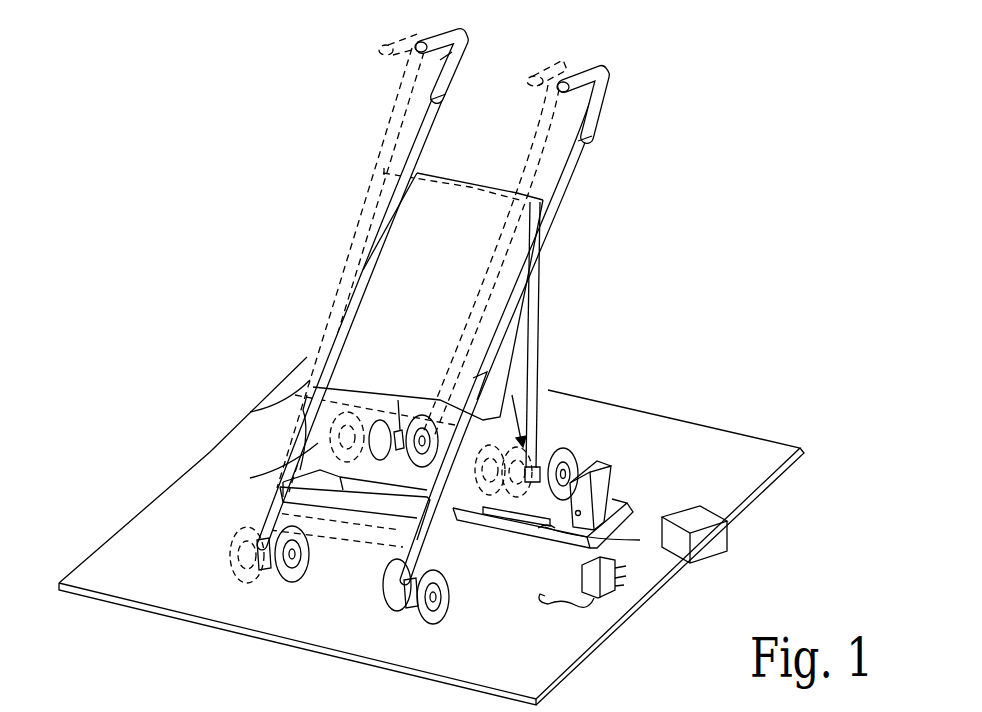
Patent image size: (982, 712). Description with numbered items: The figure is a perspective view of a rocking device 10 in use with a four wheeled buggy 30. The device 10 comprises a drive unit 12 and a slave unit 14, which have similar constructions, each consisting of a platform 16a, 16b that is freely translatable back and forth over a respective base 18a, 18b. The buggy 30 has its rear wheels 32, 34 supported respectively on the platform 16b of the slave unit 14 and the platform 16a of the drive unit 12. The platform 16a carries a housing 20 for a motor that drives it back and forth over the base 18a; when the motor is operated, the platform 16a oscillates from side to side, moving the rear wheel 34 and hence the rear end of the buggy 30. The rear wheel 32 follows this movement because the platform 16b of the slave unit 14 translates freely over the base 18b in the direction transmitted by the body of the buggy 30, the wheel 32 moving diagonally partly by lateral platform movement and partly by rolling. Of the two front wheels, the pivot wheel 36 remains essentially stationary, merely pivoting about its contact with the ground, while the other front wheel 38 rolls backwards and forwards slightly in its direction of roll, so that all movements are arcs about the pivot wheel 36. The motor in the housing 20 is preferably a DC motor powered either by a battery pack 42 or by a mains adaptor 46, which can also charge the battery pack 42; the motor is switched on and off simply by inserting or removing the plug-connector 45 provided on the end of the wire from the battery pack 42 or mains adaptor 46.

The rocking device 10 is at (462, 452).
The drive unit 12 is at (637, 520).
The slave unit 14 is at (320, 460).
The platform 16a is at (557, 524).
The platform 16b is at (343, 480).
The base 18a is at (463, 513).
The base 18b is at (313, 480).
The housing 20 is at (600, 468).
The four wheeled buggy 30 is at (370, 230).
The rear wheel 32 is at (413, 423).
The rear wheel 34 is at (565, 443).
The pivot wheel 36 is at (377, 607).
The front wheel 38 is at (230, 570).
The battery pack 42 is at (697, 520).
The plug-connector 45 is at (570, 525).
The mains adaptor 46 is at (587, 608).